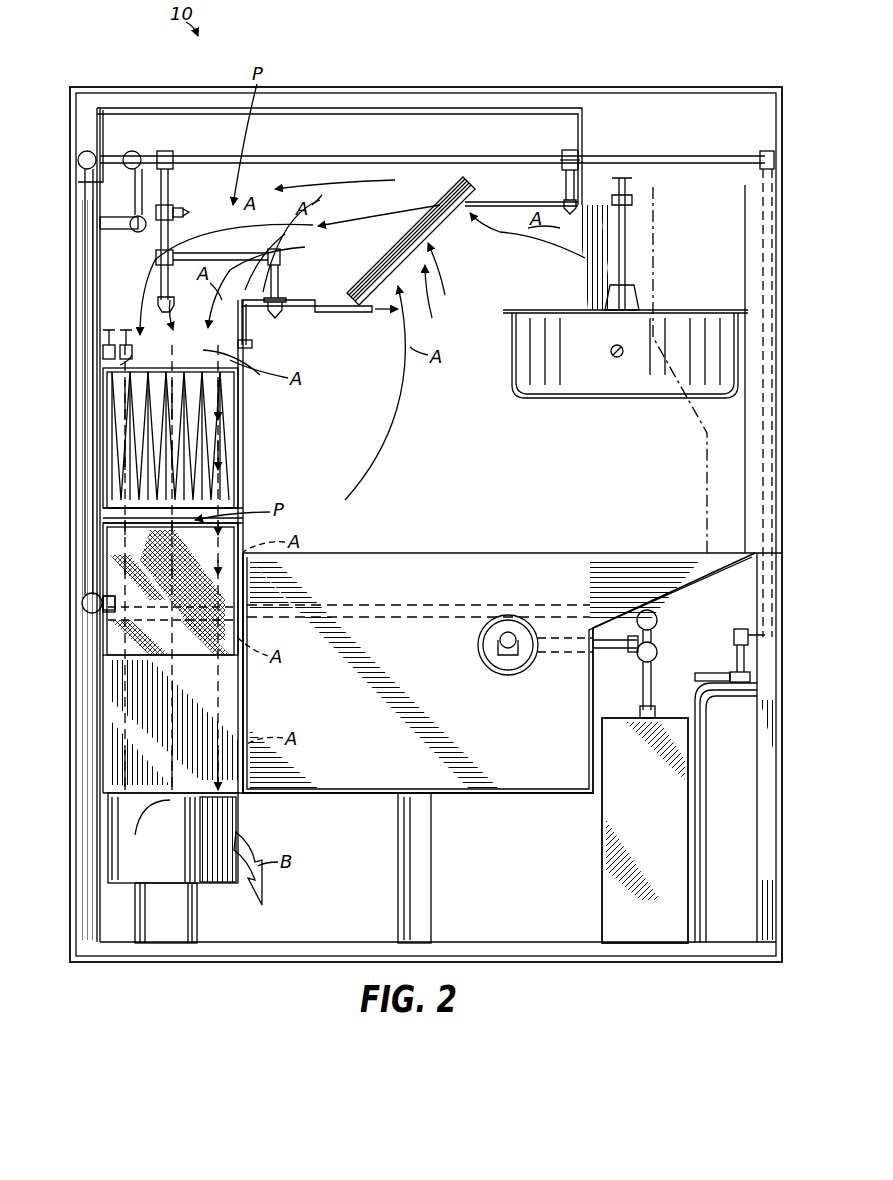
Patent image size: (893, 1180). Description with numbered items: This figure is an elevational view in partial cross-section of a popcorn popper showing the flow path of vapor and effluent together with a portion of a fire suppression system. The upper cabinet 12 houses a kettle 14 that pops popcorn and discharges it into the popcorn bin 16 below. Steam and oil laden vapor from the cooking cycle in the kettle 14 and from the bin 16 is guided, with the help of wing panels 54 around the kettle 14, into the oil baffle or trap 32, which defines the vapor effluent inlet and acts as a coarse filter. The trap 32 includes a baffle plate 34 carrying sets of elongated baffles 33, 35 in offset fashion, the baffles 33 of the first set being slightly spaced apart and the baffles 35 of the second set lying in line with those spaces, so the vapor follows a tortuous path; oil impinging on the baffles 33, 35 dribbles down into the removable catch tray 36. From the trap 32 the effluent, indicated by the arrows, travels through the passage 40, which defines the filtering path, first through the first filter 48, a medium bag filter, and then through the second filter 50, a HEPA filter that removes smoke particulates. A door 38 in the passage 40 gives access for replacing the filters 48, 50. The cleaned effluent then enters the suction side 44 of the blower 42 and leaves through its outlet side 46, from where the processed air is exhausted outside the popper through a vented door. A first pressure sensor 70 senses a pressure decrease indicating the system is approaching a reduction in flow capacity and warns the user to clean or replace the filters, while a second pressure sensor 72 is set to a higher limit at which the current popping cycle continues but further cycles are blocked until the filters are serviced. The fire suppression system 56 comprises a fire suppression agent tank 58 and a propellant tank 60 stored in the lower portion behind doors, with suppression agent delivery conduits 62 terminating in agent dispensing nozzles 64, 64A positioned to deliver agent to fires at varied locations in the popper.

The upper cabinet 12 is at (68, 272).
The kettle 14 is at (560, 398).
The popcorn bin 16 is at (430, 553).
The oil baffle or trap 32 is at (444, 274).
The baffles of first set 33 is at (436, 298).
The baffle plate 34 is at (433, 197).
The baffles of second set 35 is at (410, 215).
The catch tray 36 is at (320, 313).
The door 38 is at (245, 478).
The passage 40 is at (97, 128).
The blower 42 is at (150, 862).
The suction side 44 is at (150, 822).
The outlet side 46 is at (225, 808).
The first filter 48 is at (120, 428).
The second filter 50 is at (120, 552).
The wing panels 54 is at (657, 234).
The fire suppression system 56 is at (702, 626).
The fire suppression agent tank 58 is at (748, 770).
The propellant tank 60 is at (652, 784).
The suppression agent delivery conduits 62 is at (296, 157).
The agent dispensing nozzles 64 is at (182, 211).
The agent dispensing nozzle 64A is at (562, 203).
The pressure sensor 70 is at (103, 352).
The second pressure sensor 72 is at (120, 382).